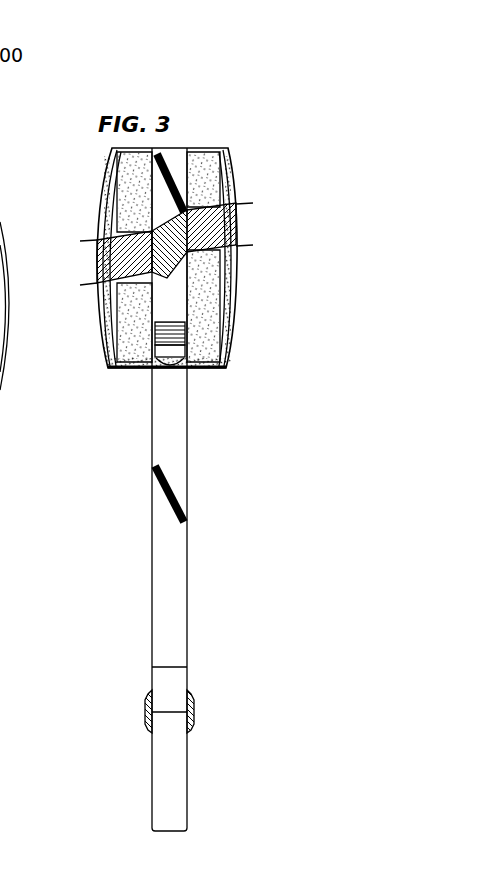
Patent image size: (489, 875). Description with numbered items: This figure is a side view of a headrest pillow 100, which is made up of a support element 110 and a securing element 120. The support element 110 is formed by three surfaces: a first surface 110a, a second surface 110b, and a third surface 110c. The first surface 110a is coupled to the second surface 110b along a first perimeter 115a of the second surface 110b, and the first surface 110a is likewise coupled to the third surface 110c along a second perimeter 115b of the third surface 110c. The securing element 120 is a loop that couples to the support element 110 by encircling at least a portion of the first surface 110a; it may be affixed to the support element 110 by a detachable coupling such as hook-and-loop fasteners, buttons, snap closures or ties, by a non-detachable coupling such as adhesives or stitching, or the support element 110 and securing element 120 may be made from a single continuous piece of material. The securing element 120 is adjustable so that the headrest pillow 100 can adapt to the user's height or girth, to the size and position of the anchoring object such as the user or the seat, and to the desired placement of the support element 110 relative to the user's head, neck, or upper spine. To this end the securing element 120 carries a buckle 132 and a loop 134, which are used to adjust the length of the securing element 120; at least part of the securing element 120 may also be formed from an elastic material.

The headrest pillow 100 is at (165, 97).
The support element 110 is at (230, 175).
The first surface 110a is at (207, 148).
The second surface 110b is at (240, 263).
The third surface 110c is at (98, 203).
The first perimeter 115a is at (233, 343).
The second perimeter 115b is at (104, 322).
The securing element 120 is at (170, 443).
The buckle 132 is at (200, 327).
The loop 134 is at (194, 710).